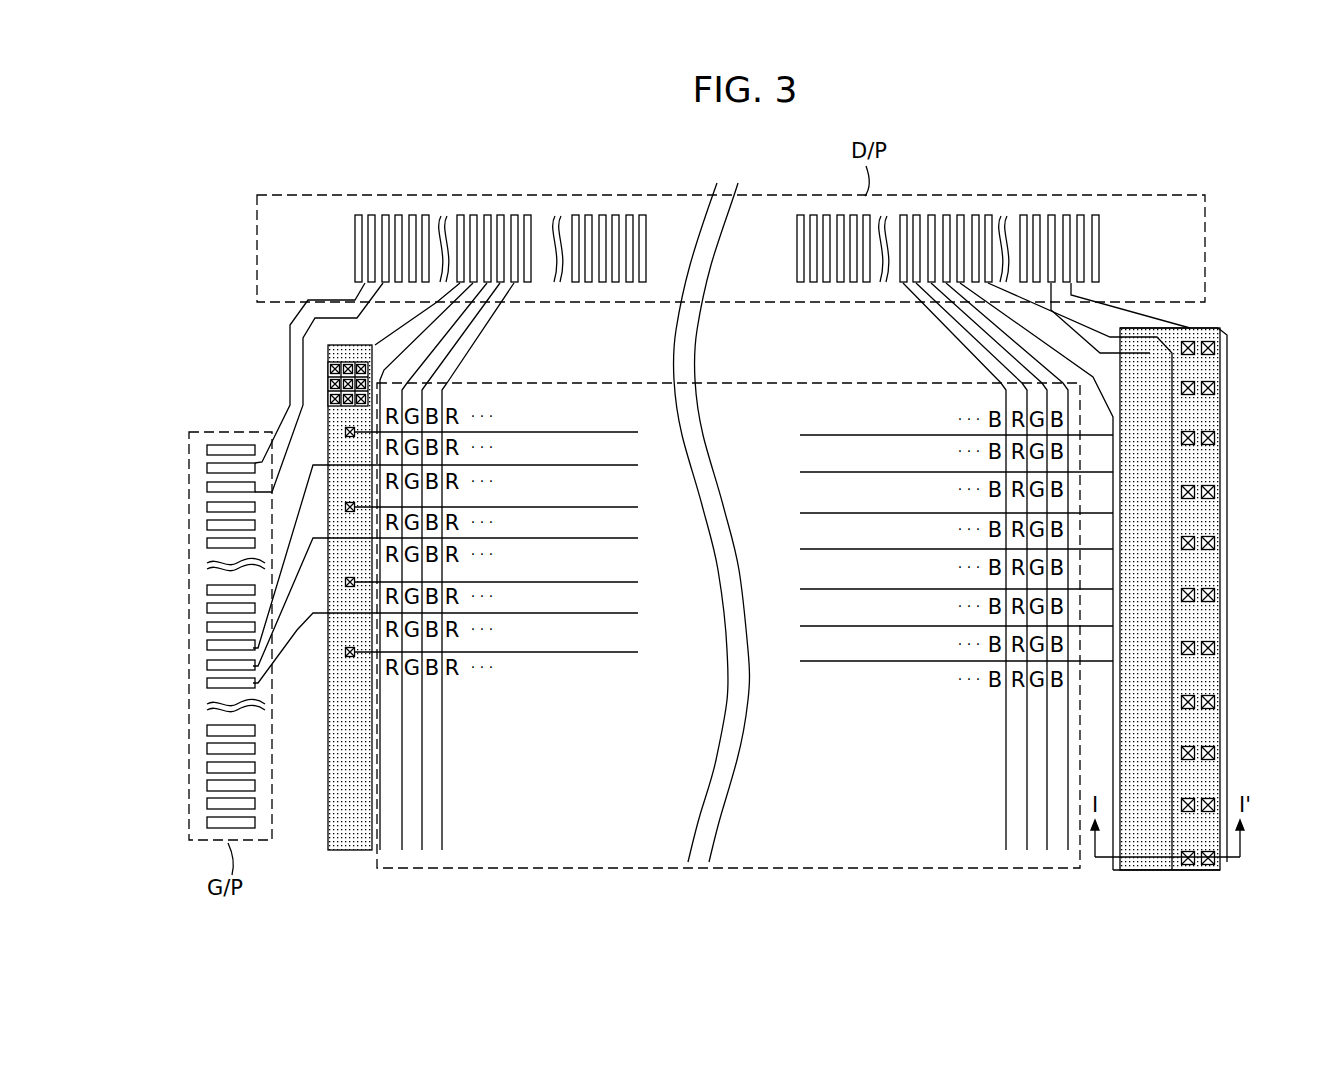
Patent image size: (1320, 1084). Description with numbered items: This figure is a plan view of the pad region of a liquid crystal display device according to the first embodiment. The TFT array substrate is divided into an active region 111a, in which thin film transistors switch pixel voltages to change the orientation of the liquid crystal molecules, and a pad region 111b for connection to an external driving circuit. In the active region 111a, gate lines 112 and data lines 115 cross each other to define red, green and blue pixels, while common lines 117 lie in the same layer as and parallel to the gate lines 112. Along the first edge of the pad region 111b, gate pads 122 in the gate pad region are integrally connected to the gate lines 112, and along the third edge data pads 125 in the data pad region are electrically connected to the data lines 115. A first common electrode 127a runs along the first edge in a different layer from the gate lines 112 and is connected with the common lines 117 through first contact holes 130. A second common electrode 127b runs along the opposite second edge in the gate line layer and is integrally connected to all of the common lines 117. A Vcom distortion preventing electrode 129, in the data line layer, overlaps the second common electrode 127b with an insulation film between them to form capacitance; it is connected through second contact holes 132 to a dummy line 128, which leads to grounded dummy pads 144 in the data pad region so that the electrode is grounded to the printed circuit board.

The active region 111a is at (886, 852).
The pad region 111b is at (764, 325).
The gate lines 112 is at (522, 623).
The data lines 115 is at (428, 785).
The common lines 117 is at (580, 652).
The gate pads 122 is at (207, 645).
The data pads 125 is at (603, 217).
The first common electrode 127a is at (345, 852).
The second common electrode 127b is at (1105, 850).
The dummy line 128 is at (1228, 352).
The Vcom distortion preventing electrode 129 is at (1196, 327).
The first contact holes 130 is at (352, 657).
The second contact holes 132 is at (1218, 388).
The dummy pads 144 is at (1068, 225).